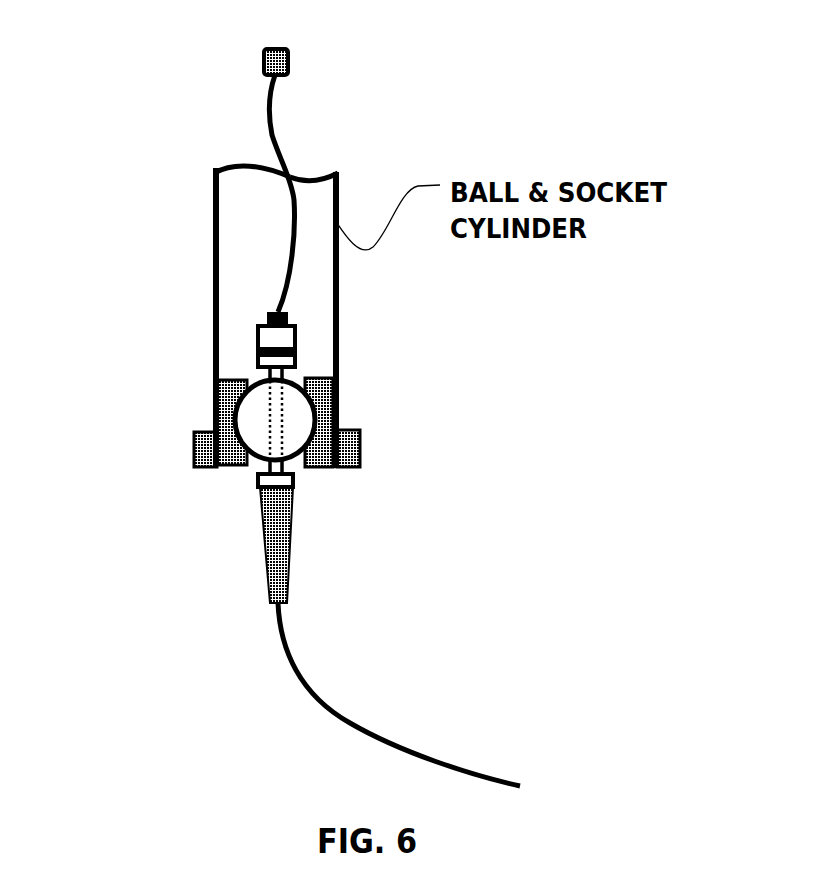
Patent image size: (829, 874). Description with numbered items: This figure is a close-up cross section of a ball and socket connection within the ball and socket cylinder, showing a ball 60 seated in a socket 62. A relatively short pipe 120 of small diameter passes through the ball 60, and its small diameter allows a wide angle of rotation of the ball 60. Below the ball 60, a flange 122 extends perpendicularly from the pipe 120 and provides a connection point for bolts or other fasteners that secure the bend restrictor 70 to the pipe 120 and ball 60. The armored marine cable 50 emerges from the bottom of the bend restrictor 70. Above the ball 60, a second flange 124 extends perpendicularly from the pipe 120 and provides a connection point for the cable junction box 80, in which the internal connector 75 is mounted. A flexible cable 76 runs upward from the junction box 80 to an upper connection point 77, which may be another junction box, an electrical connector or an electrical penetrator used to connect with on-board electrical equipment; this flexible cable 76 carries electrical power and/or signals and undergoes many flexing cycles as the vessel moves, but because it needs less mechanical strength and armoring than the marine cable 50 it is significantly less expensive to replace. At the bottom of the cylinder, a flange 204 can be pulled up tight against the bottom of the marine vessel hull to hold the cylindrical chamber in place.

The marine cable 50 is at (293, 663).
The ball 60 is at (250, 422).
The socket 62 is at (220, 390).
The bend restrictor 70 is at (293, 542).
The internal connector 75 is at (270, 313).
The flexible cable 76 is at (276, 136).
The upper connection point 77 is at (290, 63).
The junction box 80 is at (258, 336).
The pipe 120 is at (312, 412).
The flange 122 is at (258, 480).
The flange 124 is at (295, 363).
The flange 204 is at (360, 455).